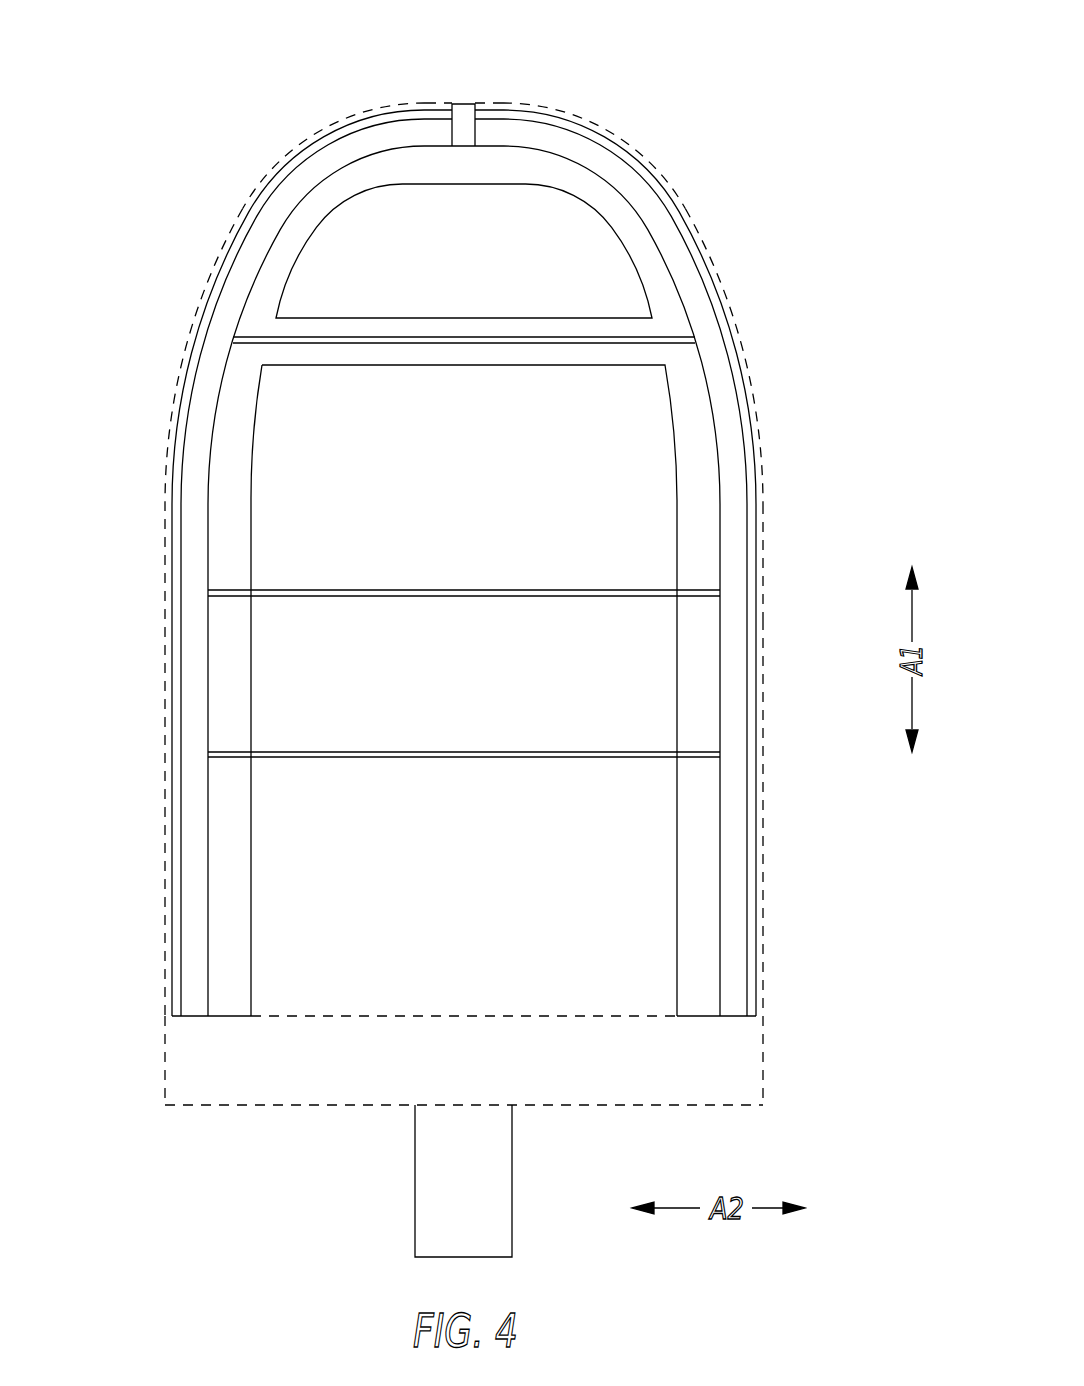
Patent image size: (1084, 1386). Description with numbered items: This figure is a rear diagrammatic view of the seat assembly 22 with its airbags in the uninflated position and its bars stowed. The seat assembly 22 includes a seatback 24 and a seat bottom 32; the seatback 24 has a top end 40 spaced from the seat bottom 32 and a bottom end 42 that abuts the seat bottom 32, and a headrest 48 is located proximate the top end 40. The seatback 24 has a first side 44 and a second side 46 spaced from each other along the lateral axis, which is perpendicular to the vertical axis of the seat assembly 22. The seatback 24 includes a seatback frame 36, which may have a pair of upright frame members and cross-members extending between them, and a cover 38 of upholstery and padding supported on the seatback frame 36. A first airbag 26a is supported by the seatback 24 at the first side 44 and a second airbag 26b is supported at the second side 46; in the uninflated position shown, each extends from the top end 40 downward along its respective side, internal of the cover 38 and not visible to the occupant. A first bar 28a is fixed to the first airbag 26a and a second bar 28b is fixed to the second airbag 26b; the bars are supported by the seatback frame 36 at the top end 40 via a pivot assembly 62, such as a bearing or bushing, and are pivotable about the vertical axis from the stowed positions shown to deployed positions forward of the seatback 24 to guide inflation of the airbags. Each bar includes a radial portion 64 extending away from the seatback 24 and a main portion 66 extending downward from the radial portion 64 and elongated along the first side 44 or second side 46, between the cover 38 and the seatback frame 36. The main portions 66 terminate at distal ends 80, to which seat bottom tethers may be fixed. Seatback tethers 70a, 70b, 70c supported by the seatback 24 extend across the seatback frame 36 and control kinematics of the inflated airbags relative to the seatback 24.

The seat assembly 22 is at (777, 137).
The seatback 24 is at (785, 480).
The first airbag 26a is at (745, 405).
The second airbag 26b is at (205, 300).
The first bar 28a is at (725, 300).
The second bar 28b is at (190, 405).
The seat bottom 32 is at (765, 1060).
The seatback frame 36 is at (690, 480).
The cover 38 is at (635, 135).
The top end 40 is at (388, 100).
The bottom end 42 is at (162, 1102).
The first side 44 is at (768, 650).
The second side 46 is at (160, 648).
The headrest 48 is at (705, 215).
The pivot assembly 62 is at (468, 104).
The radial portion 64 is at (434, 104).
The main portion 66 is at (175, 570).
The seatback tether 70a is at (350, 343).
The seatback tether 70b is at (445, 596).
The seatback tether 70c is at (573, 758).
The distal ends 80 is at (178, 1012).